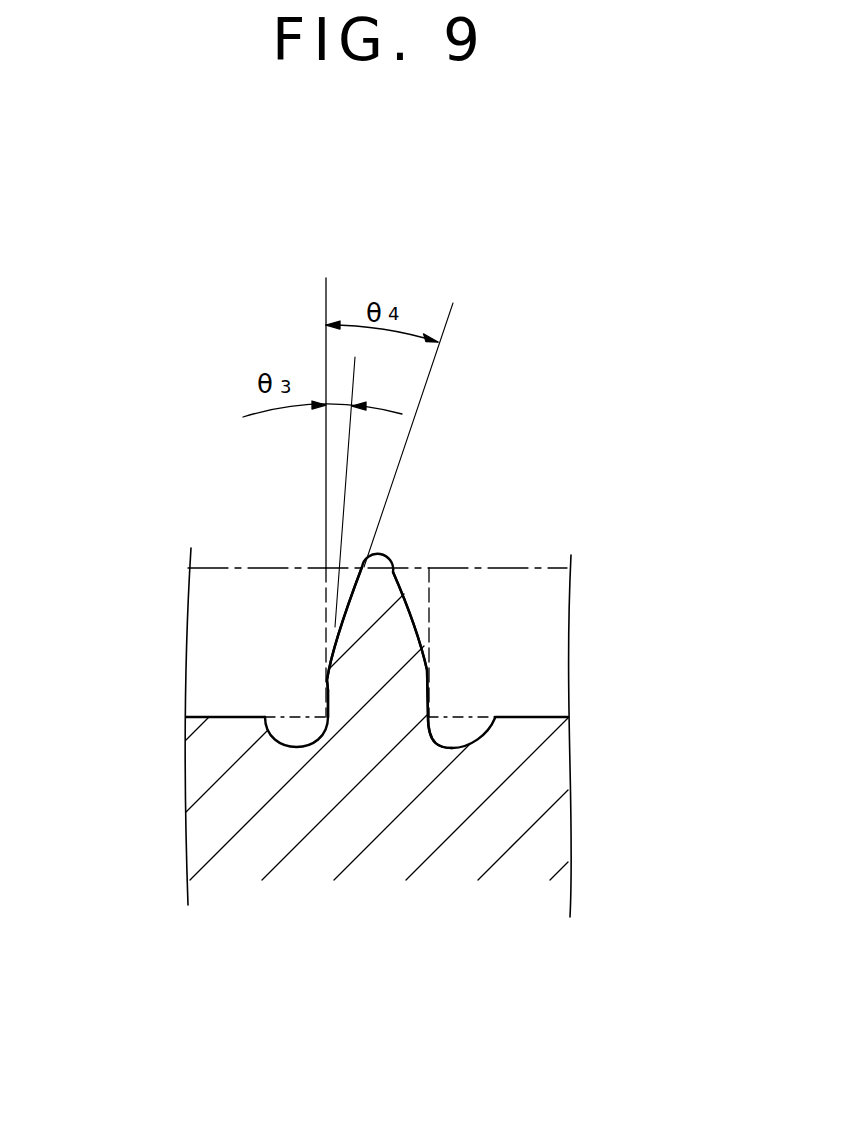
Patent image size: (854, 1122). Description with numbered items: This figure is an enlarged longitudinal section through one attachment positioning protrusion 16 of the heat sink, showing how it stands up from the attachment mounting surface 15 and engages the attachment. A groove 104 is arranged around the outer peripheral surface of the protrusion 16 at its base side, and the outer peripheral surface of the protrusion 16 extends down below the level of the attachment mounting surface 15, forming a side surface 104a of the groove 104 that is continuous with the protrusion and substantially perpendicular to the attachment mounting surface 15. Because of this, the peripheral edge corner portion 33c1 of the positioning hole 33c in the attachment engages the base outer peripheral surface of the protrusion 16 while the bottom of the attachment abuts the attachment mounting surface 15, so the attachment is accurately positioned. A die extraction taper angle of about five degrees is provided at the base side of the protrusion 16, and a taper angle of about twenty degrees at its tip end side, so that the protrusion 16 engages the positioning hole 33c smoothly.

The attachment positioning protrusion 16 is at (392, 552).
The positioning hole 33c is at (428, 585).
The peripheral edge corner portion 33c1 is at (327, 718).
The attachment mounting surface 15 is at (161, 666).
The groove 104 is at (478, 735).
The side surface 104a is at (433, 713).